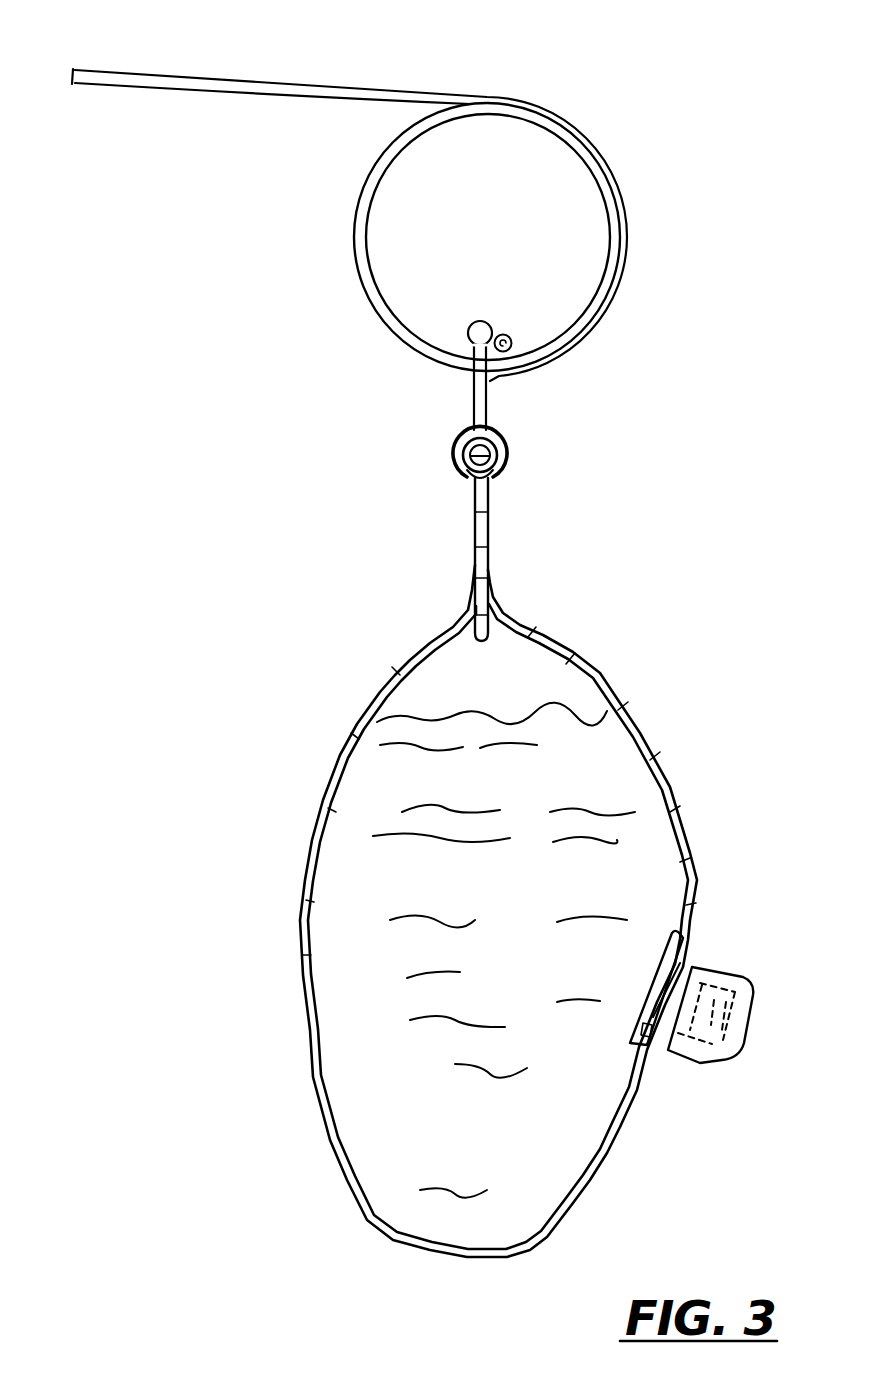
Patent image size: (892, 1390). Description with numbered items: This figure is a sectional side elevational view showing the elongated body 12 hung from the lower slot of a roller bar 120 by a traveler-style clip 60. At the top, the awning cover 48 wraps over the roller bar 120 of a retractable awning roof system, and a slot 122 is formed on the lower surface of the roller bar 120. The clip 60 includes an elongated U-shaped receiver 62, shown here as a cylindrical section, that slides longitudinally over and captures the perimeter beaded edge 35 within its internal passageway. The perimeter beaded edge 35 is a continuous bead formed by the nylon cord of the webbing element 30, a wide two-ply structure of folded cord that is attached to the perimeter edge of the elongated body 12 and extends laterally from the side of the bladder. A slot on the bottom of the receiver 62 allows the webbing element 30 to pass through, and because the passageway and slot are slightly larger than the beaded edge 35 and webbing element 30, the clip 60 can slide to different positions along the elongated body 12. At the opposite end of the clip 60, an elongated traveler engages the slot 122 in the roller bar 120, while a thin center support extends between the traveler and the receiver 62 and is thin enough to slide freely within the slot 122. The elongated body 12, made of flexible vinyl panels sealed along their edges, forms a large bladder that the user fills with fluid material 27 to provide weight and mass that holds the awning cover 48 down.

The awning cover 48 is at (248, 90).
The roller bar 120 is at (510, 253).
The clip 60 is at (433, 402).
The slot 122 is at (508, 388).
The U-shaped receiver 62 is at (507, 450).
The perimeter beaded edge 35 is at (464, 477).
The webbing element 30 is at (489, 558).
The elongated body 12 is at (623, 707).
The fluid material 27 is at (403, 897).